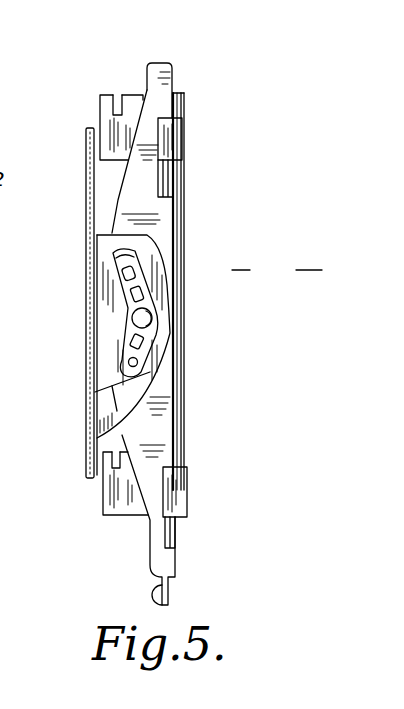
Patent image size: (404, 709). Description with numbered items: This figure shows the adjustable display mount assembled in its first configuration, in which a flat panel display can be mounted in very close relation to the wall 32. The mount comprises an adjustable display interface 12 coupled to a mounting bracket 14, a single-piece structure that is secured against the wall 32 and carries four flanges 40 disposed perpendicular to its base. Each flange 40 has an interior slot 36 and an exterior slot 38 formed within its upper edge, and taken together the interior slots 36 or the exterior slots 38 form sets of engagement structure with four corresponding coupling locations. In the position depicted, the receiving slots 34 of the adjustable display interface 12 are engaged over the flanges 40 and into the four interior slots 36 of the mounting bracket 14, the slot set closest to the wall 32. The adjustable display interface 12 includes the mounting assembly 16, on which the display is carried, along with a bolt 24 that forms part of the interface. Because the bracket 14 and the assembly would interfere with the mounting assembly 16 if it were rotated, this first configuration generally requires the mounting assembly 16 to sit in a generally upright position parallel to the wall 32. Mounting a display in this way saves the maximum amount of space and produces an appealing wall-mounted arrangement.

The adjustable display interface 12 is at (80, 398).
The mounting bracket 14 is at (185, 252).
The mounting assembly 16 is at (86, 192).
The bolt 24 is at (145, 318).
The wall 32 is at (277, 269).
The receiving slots 34 is at (167, 173).
The interior slot 36 is at (173, 93).
The exterior slot 38 is at (113, 102).
The flange 40 is at (115, 130).